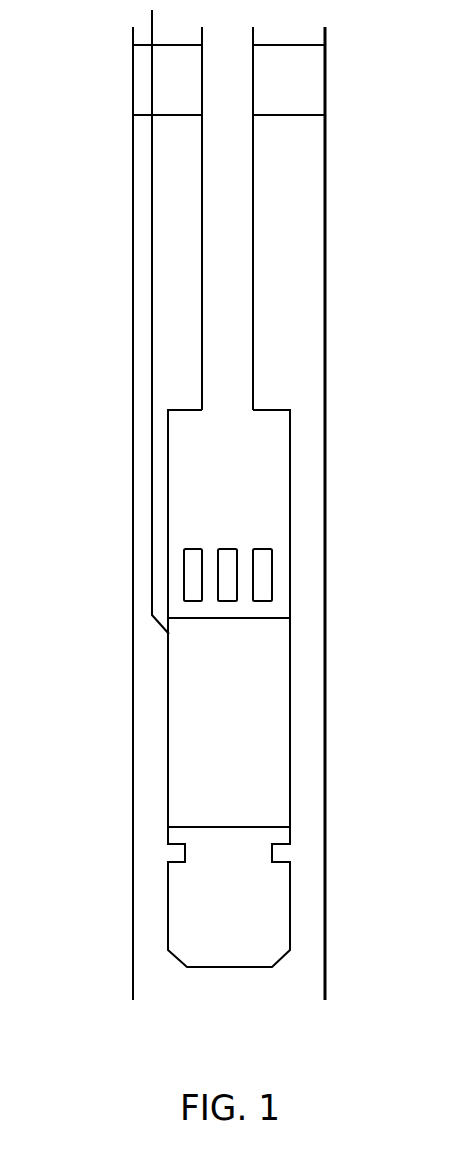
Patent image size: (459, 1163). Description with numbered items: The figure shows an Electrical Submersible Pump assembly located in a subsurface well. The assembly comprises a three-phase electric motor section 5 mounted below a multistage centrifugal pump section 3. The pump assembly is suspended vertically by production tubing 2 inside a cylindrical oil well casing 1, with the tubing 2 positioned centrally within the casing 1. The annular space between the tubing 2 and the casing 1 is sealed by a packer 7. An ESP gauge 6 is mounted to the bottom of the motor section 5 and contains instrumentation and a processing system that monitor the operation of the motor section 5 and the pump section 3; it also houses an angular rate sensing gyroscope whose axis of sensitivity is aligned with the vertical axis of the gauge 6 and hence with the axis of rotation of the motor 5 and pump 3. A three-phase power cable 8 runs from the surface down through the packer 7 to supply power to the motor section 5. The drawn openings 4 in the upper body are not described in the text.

The oil well casing 1 is at (132, 235).
The production tubing 2 is at (255, 337).
The multistage centrifugal pump section 3 is at (277, 473).
The slots 4 is at (272, 582).
The electric motor section 5 is at (277, 678).
The ESP gauge 6 is at (275, 912).
The packer 7 is at (315, 90).
The three phase power cable 8 is at (152, 402).